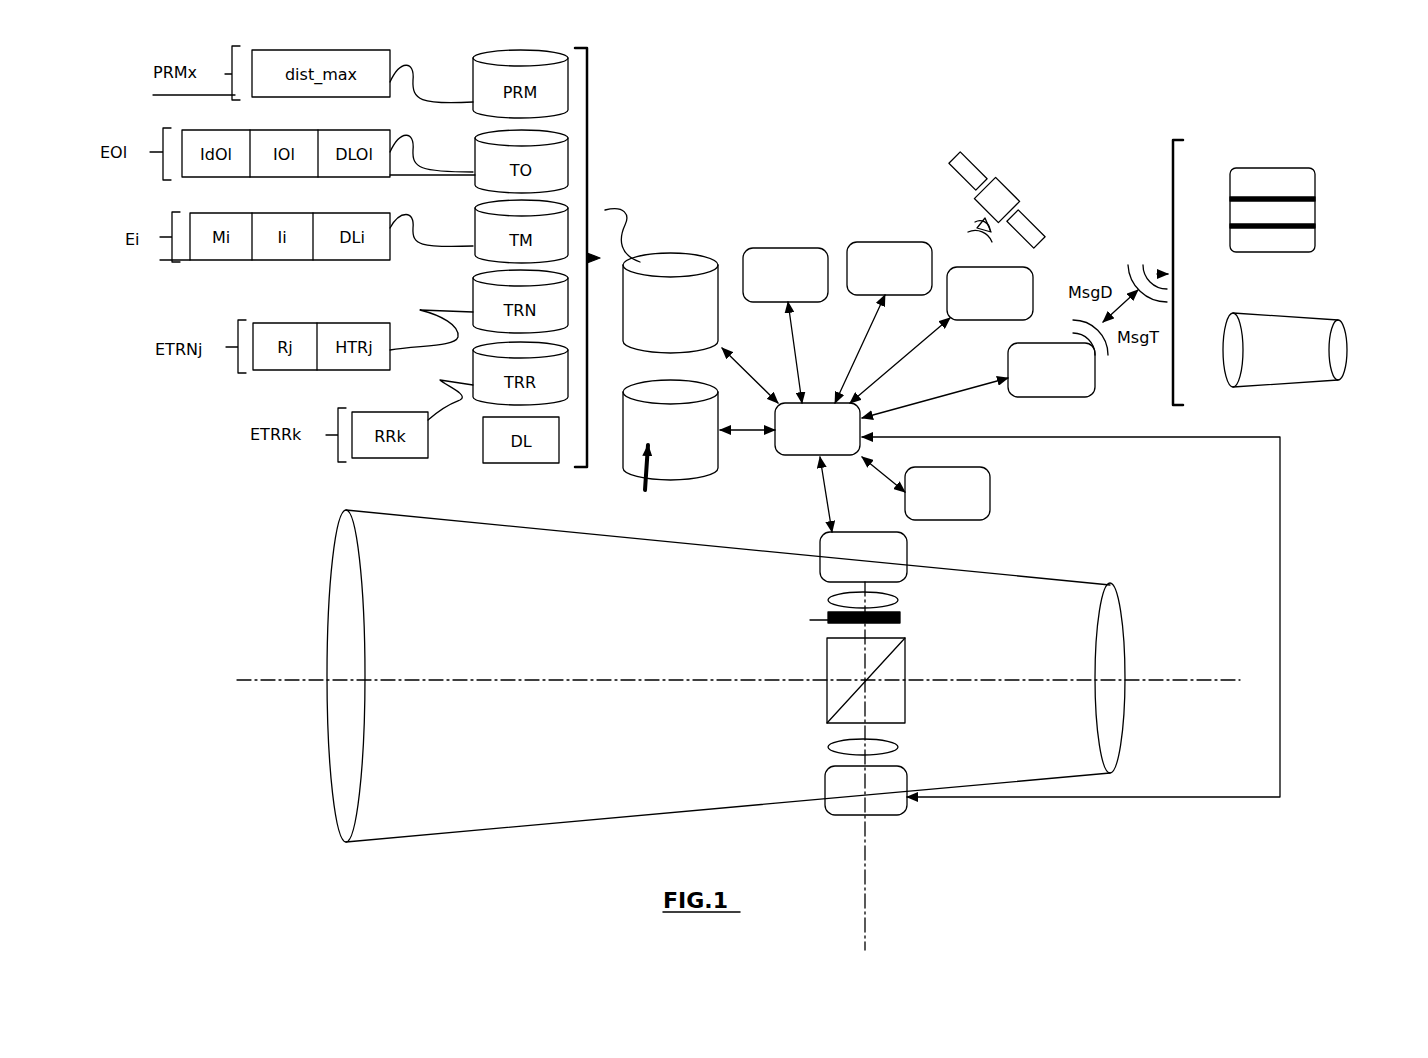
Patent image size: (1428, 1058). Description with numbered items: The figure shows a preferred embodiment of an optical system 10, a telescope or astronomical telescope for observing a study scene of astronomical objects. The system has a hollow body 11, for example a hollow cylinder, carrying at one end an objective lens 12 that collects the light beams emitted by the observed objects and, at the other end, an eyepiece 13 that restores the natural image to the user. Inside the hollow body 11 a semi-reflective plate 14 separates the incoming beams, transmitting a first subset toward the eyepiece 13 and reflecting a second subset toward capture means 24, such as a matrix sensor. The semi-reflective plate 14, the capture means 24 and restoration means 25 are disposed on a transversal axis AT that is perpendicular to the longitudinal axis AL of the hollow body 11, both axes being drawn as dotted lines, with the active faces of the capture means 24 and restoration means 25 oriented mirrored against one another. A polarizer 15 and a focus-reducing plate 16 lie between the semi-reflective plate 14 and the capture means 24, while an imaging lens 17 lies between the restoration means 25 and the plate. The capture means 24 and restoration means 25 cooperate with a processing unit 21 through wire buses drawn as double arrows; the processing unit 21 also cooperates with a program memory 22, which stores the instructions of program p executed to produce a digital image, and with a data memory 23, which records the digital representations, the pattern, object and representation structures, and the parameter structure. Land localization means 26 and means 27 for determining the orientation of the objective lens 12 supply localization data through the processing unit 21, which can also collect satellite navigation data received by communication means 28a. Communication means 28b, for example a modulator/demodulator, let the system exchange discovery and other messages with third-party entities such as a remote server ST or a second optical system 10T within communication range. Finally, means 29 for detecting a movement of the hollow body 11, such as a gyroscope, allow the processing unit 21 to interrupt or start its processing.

The optical system 10 is at (283, 590).
The second optical system 10T is at (1347, 340).
The hollow body 11 is at (398, 836).
The objective lens 12 is at (340, 532).
The eyepiece 13 is at (1105, 592).
The semi-reflective plate 14 is at (827, 722).
The polarizer 15 is at (828, 612).
The focus-reducing plate 16 is at (898, 598).
The imaging lens 17 is at (900, 745).
The processing unit 21 is at (817, 429).
The program memory 22 is at (670, 430).
The data memory 23 is at (670, 303).
The capture means 24 is at (863, 557).
The restoration means 25 is at (866, 790).
The land localization means 26 is at (785, 275).
The means for determining the orientation of the objective lens 27 is at (889, 268).
The communication means 28a is at (990, 293).
The communication means 28b is at (1051, 370).
The means for detecting a movement of the hollow body 29 is at (947, 493).
The determined whole number p is at (643, 485).
The remote server ST is at (1315, 205).
The longitudinal axis AL is at (293, 680).
The transversal axis AT is at (868, 918).